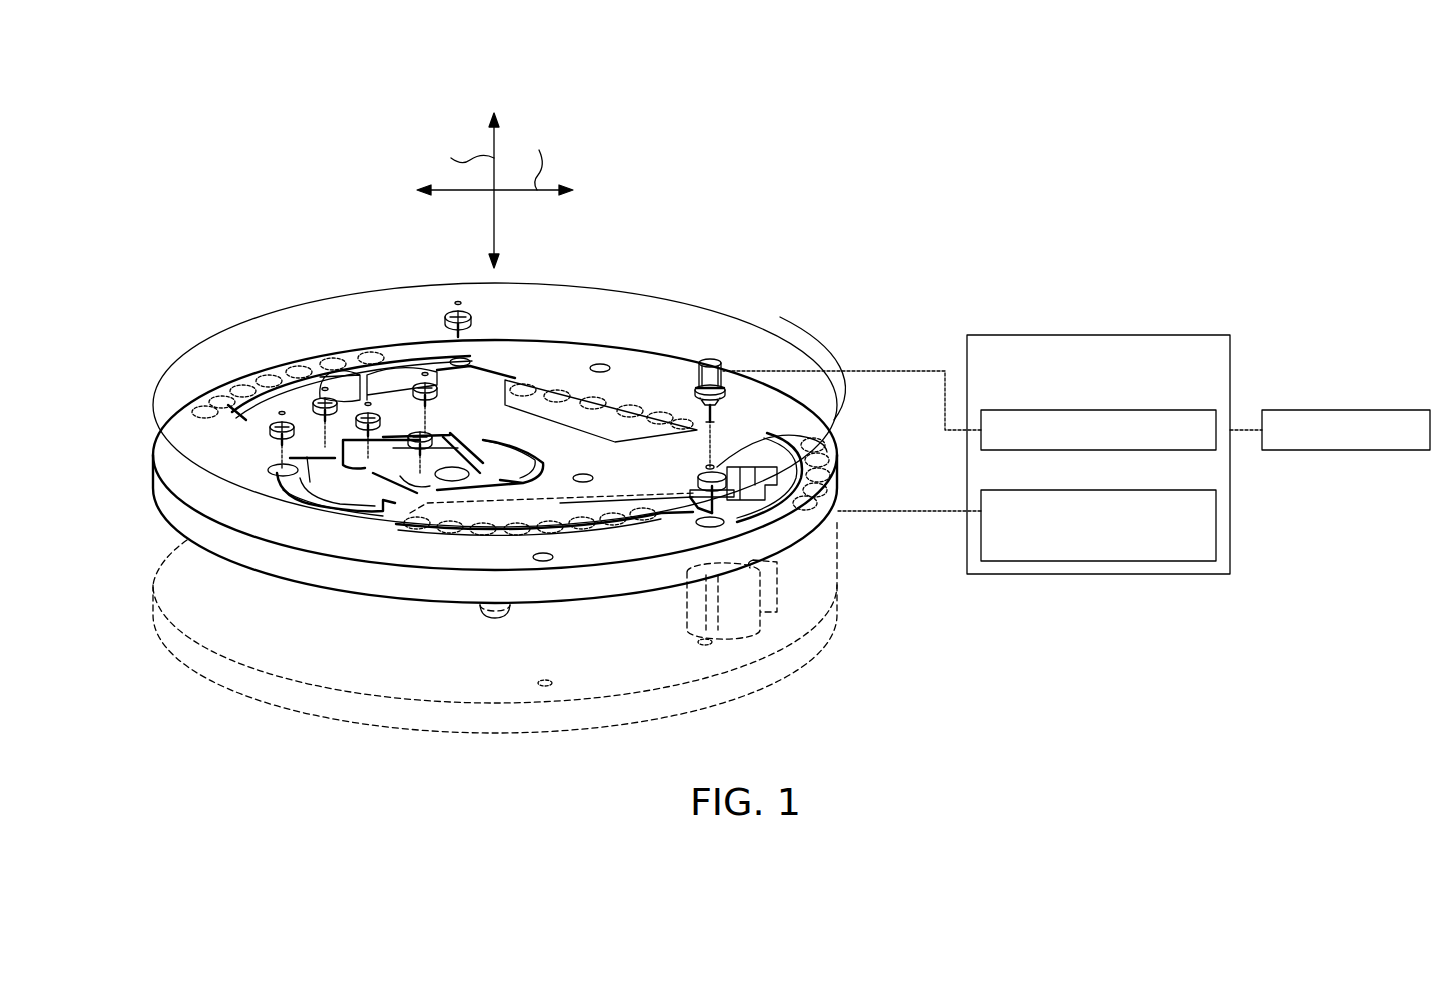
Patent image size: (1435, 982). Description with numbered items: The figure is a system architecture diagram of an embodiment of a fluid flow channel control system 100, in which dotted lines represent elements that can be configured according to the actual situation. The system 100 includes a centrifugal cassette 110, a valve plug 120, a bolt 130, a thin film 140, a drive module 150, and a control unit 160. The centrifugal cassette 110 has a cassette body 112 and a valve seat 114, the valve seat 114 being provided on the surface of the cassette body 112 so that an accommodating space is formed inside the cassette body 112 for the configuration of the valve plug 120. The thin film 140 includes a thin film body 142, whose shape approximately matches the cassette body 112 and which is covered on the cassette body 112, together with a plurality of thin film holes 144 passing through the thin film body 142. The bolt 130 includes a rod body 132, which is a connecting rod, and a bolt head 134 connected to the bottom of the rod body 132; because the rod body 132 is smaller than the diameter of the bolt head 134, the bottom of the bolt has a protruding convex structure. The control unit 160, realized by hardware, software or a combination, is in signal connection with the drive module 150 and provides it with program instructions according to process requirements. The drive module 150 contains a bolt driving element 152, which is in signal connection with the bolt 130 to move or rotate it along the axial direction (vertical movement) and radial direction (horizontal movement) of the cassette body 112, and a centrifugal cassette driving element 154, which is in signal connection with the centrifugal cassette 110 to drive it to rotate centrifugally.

The fluid flow channel control system 100 is at (147, 170).
The centrifugal cassette 110 is at (153, 482).
The cassette body 112 is at (812, 517).
The valve seat 114 is at (743, 527).
The valve plug 120 is at (808, 490).
The bolt 130 is at (708, 358).
The rod body 132 is at (728, 392).
The bolt head 134 is at (717, 422).
The thin film 140 is at (165, 365).
The thin film body 142 is at (822, 398).
The thin film holes 144 is at (830, 447).
The drive module 150 is at (1088, 335).
The bolt driving element 152 is at (1095, 410).
The centrifugal cassette driving element 154 is at (1095, 490).
The control unit 160 is at (1321, 410).